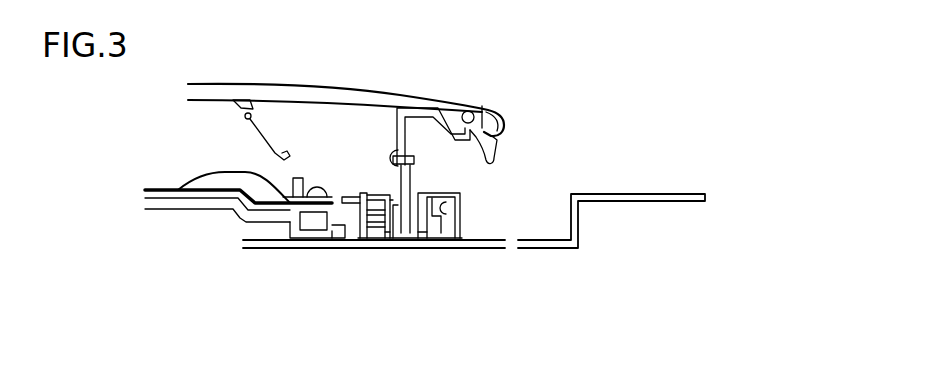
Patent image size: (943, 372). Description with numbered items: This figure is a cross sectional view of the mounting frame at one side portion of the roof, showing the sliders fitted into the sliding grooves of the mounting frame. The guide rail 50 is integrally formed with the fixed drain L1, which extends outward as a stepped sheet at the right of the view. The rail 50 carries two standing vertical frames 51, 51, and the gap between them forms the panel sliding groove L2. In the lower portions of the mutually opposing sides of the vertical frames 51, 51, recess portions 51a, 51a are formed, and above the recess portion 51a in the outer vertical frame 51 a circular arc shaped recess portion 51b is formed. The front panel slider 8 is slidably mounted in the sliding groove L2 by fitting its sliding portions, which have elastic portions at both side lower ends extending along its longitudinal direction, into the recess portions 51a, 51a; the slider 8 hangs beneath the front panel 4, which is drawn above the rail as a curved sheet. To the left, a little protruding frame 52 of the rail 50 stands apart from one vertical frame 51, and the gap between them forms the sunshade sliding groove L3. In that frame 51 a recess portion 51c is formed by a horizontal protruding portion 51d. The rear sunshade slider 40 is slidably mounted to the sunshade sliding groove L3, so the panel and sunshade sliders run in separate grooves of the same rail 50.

The cover panel 4 is at (255, 91).
The front panel slider 8 is at (420, 112).
The rear sunshade slider 40 is at (352, 240).
The guide rail 50 is at (452, 232).
The vertical frame 51 is at (372, 192).
The recess portion 51a is at (383, 240).
The circular arc shaped recess portion 51b is at (446, 208).
The recess portion 51c is at (330, 238).
The horizontal protruding portion 51d is at (348, 197).
The protruding frame 52 is at (287, 240).
The fixed drain L1 is at (542, 205).
The sliding groove L2 is at (388, 190).
The sliding groove L3 is at (316, 178).